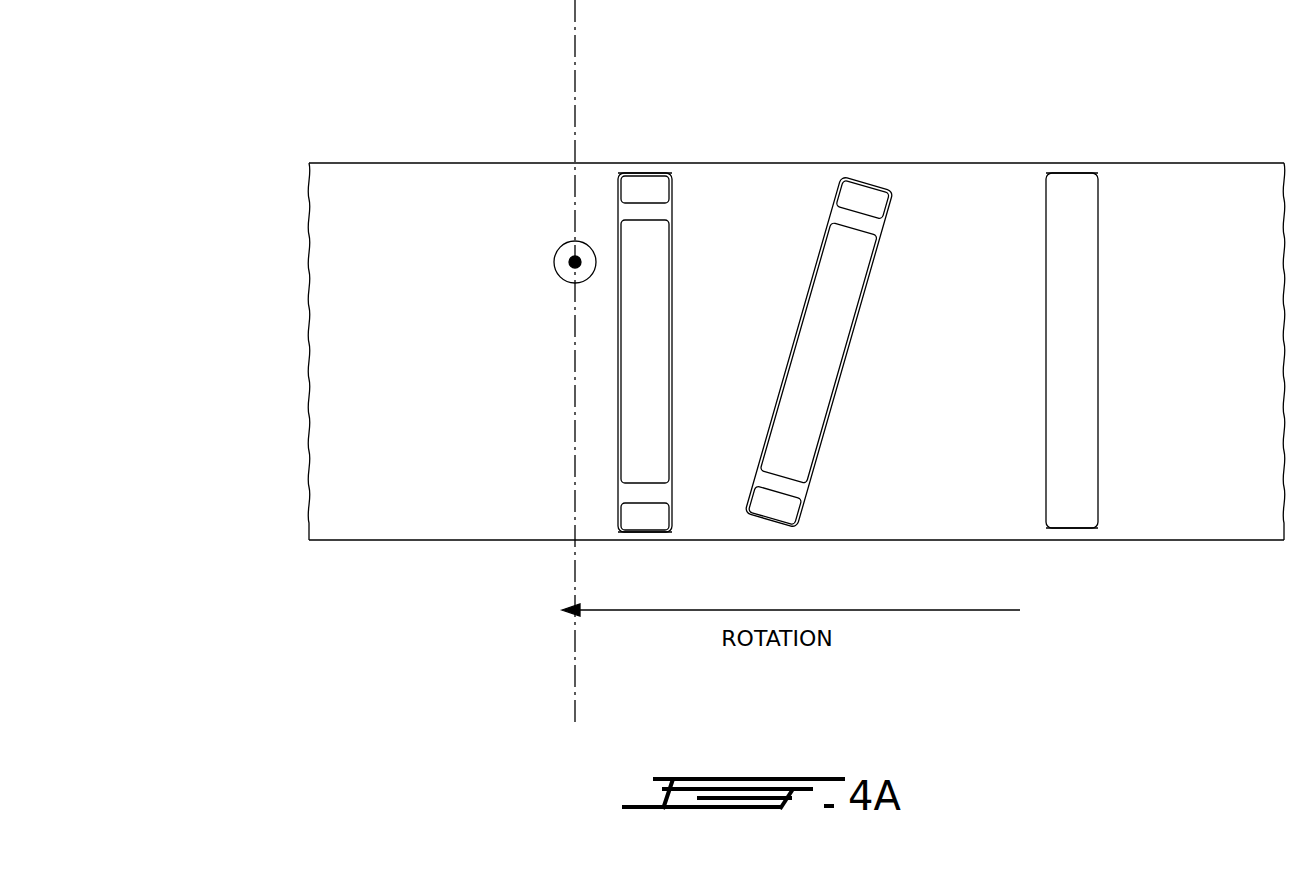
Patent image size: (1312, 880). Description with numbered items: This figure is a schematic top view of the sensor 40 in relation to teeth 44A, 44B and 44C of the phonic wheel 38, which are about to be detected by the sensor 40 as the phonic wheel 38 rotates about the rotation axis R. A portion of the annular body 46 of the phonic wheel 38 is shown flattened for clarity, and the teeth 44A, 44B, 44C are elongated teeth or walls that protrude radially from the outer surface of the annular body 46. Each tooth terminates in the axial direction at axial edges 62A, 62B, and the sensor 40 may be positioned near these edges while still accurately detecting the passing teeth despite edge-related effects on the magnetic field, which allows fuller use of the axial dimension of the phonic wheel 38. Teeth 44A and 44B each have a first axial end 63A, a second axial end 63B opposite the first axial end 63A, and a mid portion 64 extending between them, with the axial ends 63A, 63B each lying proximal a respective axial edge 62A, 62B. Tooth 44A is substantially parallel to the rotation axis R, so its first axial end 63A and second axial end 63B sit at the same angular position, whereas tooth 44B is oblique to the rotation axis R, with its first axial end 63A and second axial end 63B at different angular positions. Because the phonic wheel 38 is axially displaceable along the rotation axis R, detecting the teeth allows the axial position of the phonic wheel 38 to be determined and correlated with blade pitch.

The phonic wheel 38 is at (292, 352).
The sensor 40 is at (570, 243).
The tooth 44A is at (618, 352).
The tooth 44B is at (843, 365).
The tooth 44C is at (1098, 343).
The annular body 46 is at (1168, 459).
The axial edge 62A is at (853, 167).
The axial edge 62B is at (764, 522).
The first axial end 63A is at (634, 185).
The second axial end 63B is at (637, 520).
The mid portion 64 is at (637, 364).
The rotation axis R is at (575, 697).